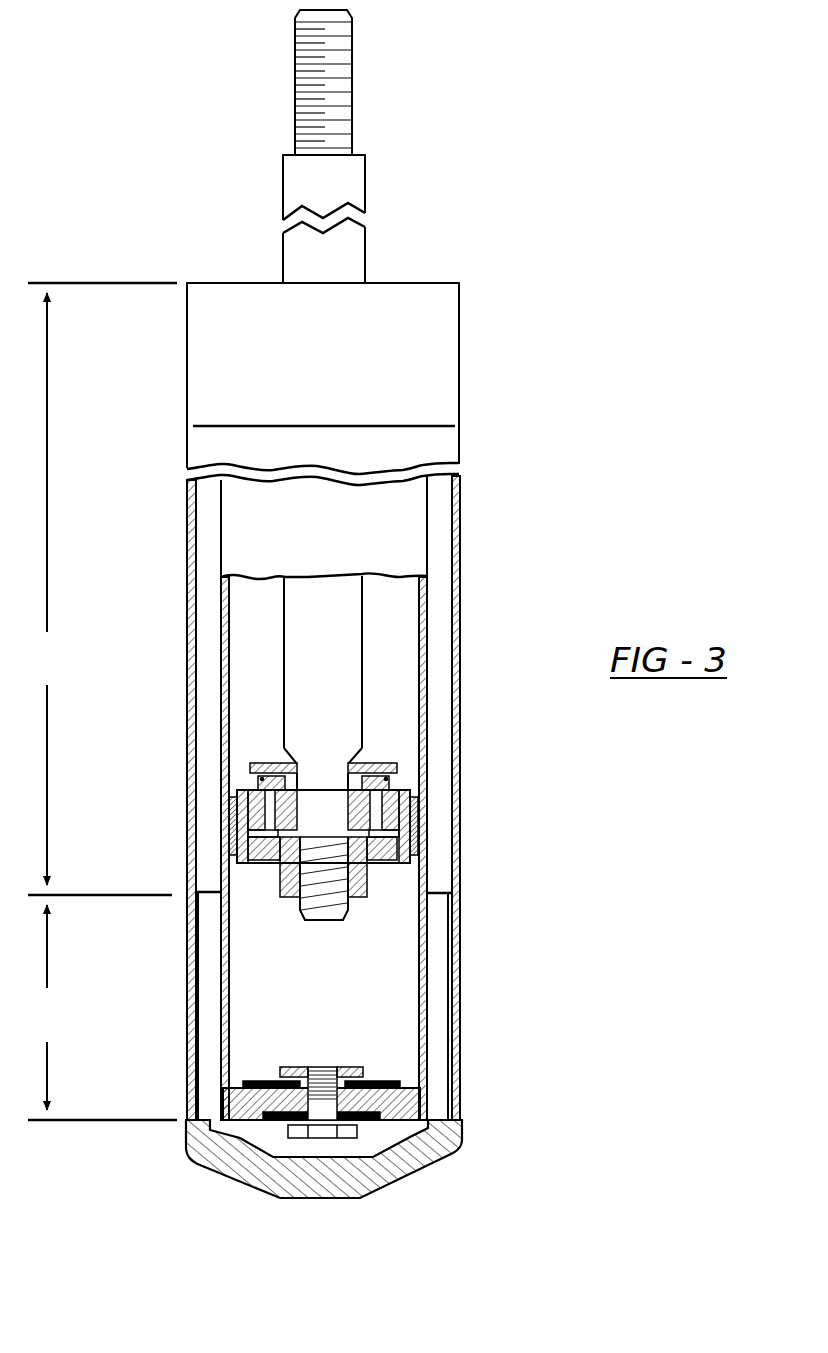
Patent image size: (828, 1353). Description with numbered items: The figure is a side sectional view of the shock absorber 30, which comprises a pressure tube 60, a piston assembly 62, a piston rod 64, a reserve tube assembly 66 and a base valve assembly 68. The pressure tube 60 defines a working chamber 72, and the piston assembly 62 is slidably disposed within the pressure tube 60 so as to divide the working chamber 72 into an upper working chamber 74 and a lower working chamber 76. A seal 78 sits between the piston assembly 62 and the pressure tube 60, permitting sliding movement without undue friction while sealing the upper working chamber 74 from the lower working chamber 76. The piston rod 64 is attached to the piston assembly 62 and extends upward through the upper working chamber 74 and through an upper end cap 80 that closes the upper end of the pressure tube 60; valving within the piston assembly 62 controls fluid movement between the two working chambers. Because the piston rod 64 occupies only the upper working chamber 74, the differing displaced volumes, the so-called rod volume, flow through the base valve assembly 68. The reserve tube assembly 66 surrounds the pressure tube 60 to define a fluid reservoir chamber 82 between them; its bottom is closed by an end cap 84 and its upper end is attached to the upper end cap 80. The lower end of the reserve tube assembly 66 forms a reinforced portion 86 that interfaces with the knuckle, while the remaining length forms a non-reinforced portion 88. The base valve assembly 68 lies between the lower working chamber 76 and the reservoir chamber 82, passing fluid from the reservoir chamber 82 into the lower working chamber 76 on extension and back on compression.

The shock absorber 30 is at (500, 168).
The pressure tube 60 is at (423, 598).
The piston assembly 62 is at (413, 807).
The piston rod 64 is at (328, 658).
The reserve tube assembly 66 is at (462, 893).
The base valve assembly 68 is at (410, 1103).
The working chamber 72 is at (326, 990).
The upper working chamber 74 is at (383, 680).
The lower working chamber 76 is at (260, 925).
The seal 78 is at (228, 820).
The upper end cap 80 is at (408, 295).
The fluid reservoir chamber 82 is at (207, 627).
The end cap 84 is at (235, 1153).
The reinforced portion 86 is at (102, 1012).
The non-reinforced portion 88 is at (102, 589).